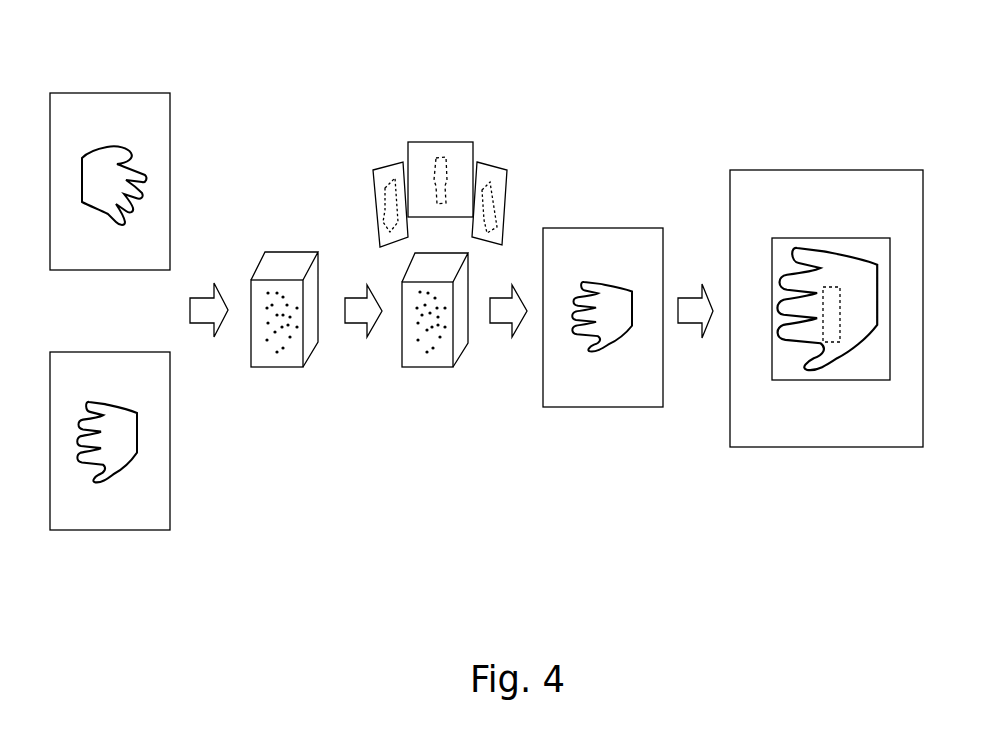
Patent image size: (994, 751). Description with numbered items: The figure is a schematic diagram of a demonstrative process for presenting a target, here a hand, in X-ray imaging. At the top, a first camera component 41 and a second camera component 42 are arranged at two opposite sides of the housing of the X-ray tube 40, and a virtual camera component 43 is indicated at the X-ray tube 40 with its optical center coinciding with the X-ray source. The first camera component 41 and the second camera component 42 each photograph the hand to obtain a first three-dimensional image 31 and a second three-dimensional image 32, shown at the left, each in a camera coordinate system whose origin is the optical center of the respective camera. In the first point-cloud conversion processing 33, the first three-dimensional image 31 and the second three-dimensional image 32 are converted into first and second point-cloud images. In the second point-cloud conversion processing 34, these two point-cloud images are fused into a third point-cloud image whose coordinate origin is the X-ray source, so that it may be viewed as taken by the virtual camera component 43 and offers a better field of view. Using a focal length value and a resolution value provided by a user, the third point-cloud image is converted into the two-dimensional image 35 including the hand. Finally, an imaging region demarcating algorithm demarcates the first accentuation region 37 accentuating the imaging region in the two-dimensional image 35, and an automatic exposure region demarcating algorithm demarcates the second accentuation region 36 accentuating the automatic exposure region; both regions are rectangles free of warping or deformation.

The first 3D image 31 is at (168, 102).
The second 3D image 32 is at (168, 497).
The first point-cloud conversion processing 33 is at (277, 277).
The second point-cloud conversion processing 34 is at (440, 362).
The 2D image 35 is at (602, 408).
The second accentuation region 36 is at (830, 337).
The first accentuation region 37 is at (787, 237).
The X-ray tube 40 is at (462, 140).
The first camera component 41 is at (387, 172).
The second camera component 42 is at (488, 168).
The virtual camera component 43 is at (440, 163).